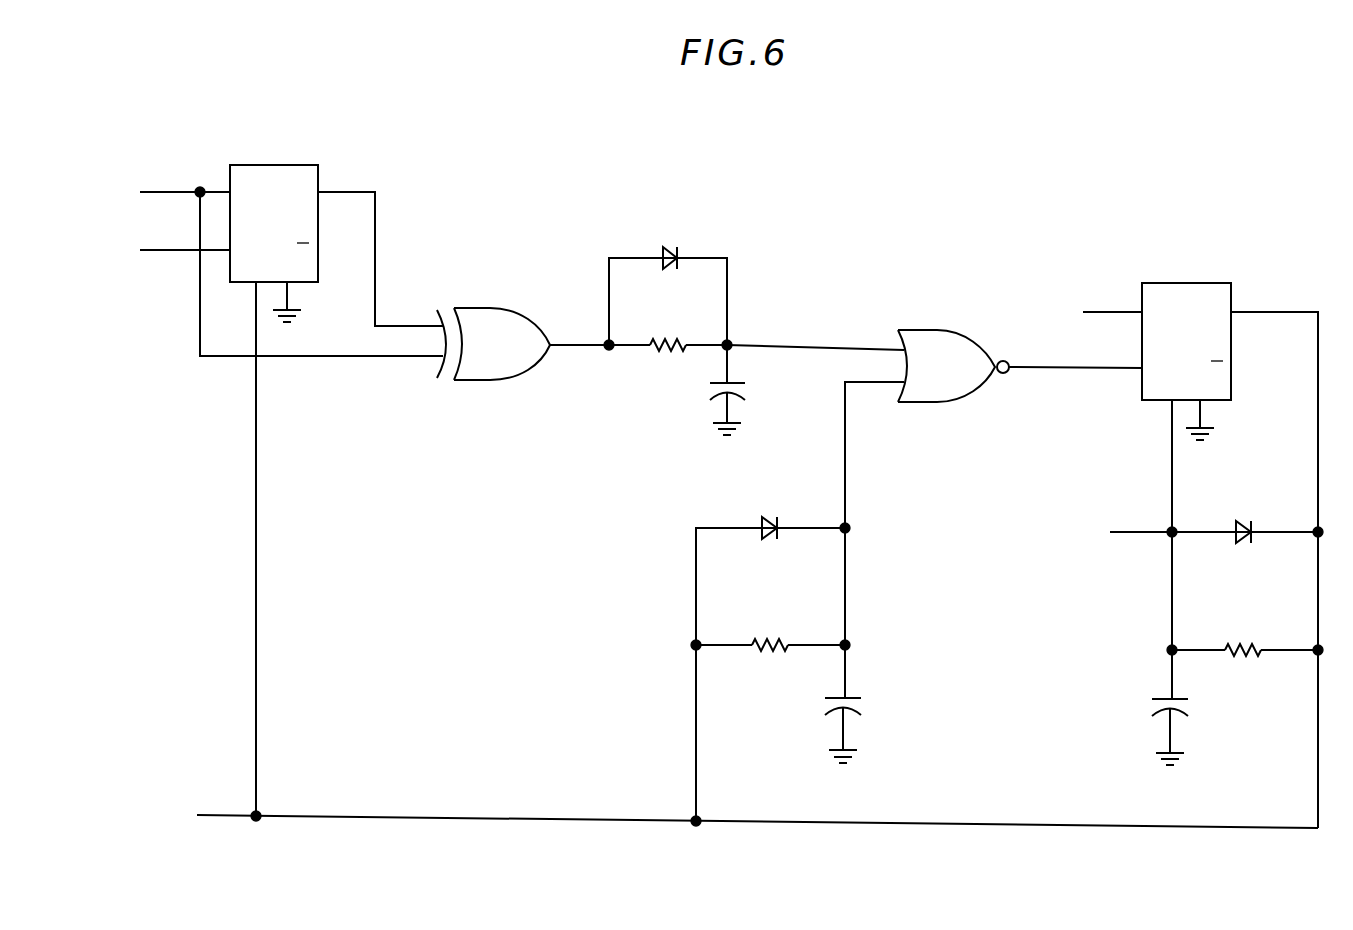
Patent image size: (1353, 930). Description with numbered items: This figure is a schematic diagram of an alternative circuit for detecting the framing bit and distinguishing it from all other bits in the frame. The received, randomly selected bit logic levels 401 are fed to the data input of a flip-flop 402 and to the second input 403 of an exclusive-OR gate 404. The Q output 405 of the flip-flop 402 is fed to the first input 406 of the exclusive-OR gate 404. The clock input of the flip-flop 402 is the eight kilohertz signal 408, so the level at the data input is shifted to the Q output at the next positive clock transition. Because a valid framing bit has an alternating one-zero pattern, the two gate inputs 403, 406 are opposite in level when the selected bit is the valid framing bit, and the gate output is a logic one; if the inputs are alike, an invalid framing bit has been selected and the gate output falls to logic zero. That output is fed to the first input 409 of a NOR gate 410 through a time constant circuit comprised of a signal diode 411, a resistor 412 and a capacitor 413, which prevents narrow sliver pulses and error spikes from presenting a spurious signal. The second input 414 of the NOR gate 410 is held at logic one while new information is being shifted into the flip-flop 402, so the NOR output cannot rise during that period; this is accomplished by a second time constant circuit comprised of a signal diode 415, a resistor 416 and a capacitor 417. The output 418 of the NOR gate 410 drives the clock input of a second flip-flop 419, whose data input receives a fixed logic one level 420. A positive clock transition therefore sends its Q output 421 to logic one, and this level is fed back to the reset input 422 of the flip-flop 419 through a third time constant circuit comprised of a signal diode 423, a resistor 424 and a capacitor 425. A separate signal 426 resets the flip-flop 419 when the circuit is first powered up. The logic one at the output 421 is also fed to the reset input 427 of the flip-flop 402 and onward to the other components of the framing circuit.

The received randomly selected bit logic levels 401 is at (172, 190).
The flip-flop 402 is at (275, 165).
The second input of exclusive-OR gate 403 is at (405, 372).
The exclusive-OR gate 404 is at (485, 308).
The Q output of flip-flop 405 is at (347, 192).
The first input of exclusive-OR gate 406 is at (405, 323).
The eight kilohertz signal 408 is at (170, 250).
The first input of NOR gate 409 is at (873, 350).
The NOR gate 410 is at (932, 330).
The signal diode 411 is at (678, 244).
The resistor 412 is at (657, 357).
The capacitor 413 is at (710, 393).
The second input of NOR gate 414 is at (872, 382).
The signal diode 415 is at (763, 515).
The resistor 416 is at (778, 635).
The capacitor 417 is at (867, 693).
The output of NOR gate 418 is at (1018, 369).
The flip-flop 419 is at (1186, 283).
The logic one level 420 is at (1113, 310).
The Q output of flip-flop 421 is at (1262, 312).
The reset input of flip-flop 422 is at (1172, 458).
The signal diode 423 is at (1250, 520).
The resistor 424 is at (1252, 642).
The capacitor 425 is at (1152, 699).
The power-up reset signal 426 is at (1137, 533).
The reset input of flip-flop 427 is at (258, 368).